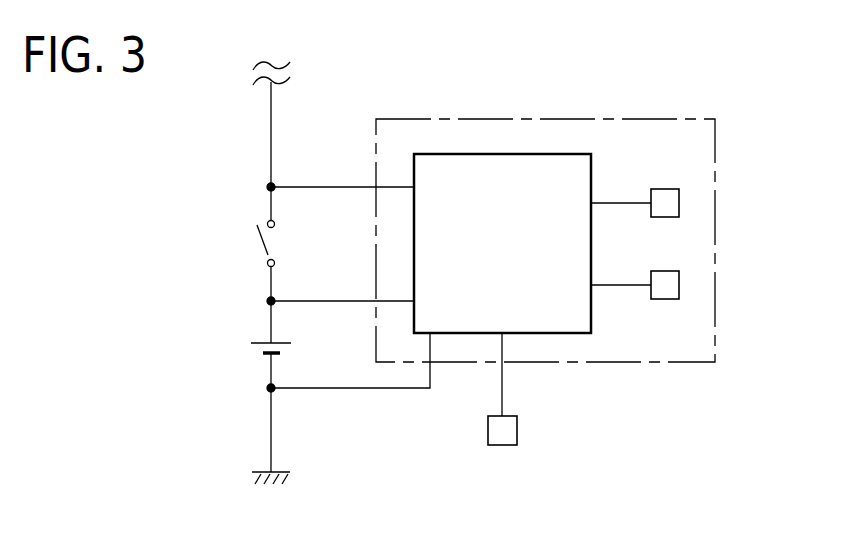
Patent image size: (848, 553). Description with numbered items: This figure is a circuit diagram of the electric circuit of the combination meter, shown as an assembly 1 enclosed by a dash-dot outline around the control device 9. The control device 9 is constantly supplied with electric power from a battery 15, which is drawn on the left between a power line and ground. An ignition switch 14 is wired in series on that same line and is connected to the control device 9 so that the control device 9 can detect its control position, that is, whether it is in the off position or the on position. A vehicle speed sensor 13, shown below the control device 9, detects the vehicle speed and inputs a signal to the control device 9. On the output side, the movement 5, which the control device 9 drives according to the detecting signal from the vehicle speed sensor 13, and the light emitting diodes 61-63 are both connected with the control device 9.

The vehicle control system 1 is at (598, 119).
The control device 9 is at (496, 154).
The ignition switch 14 is at (262, 246).
The battery 15 is at (258, 340).
The light emitting diodes 61-63 is at (679, 203).
The movement 5 is at (679, 285).
The vehicle speed sensor 13 is at (502, 445).